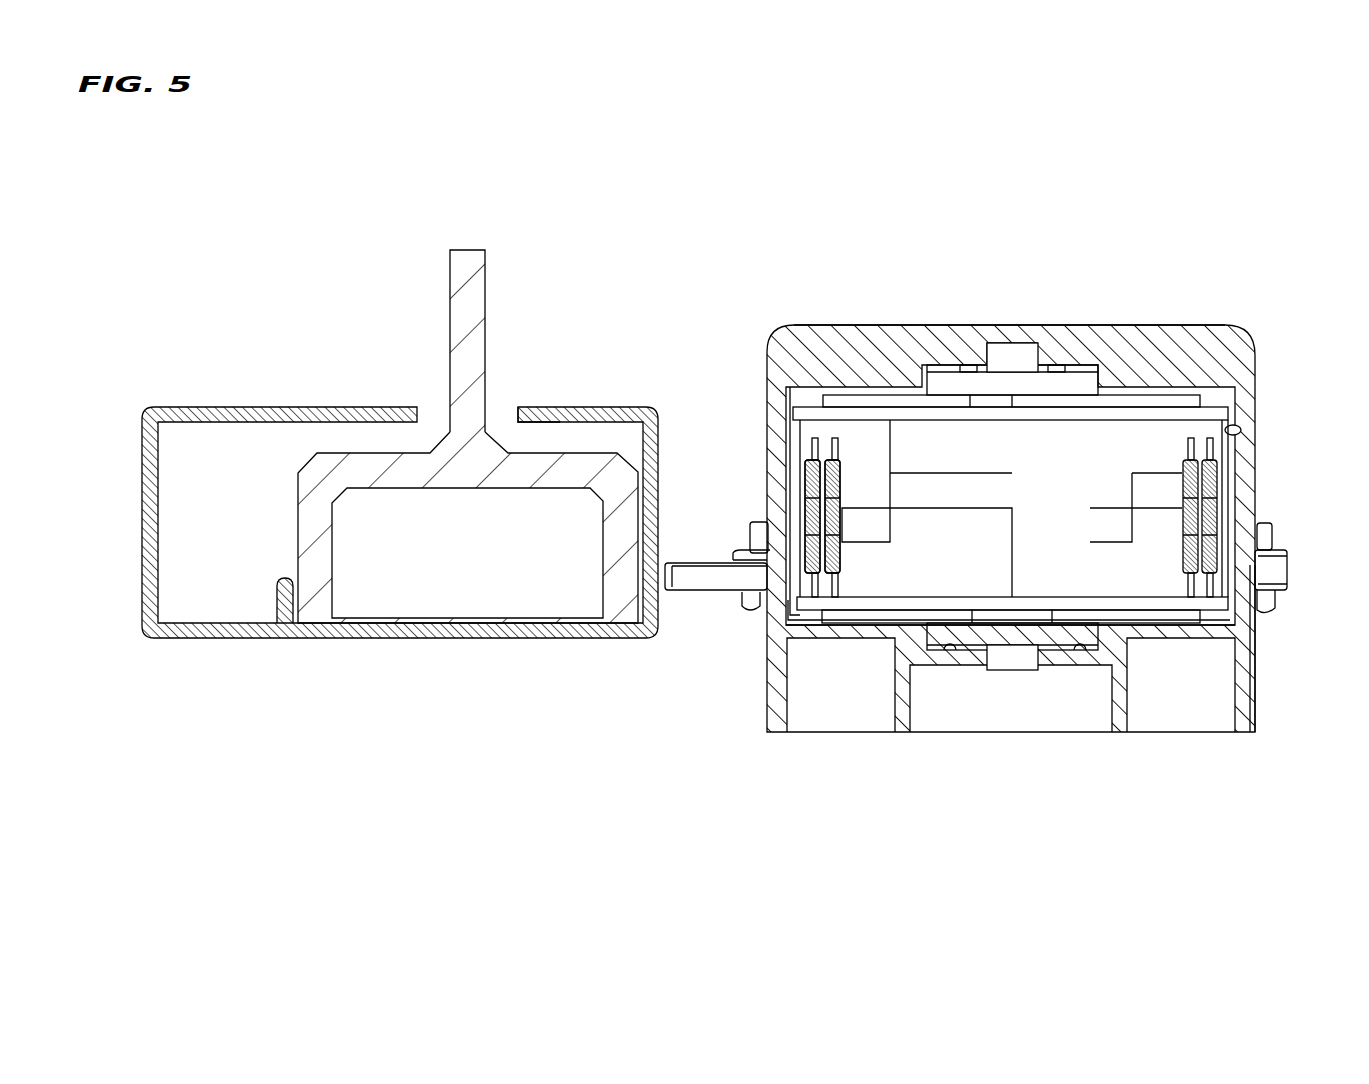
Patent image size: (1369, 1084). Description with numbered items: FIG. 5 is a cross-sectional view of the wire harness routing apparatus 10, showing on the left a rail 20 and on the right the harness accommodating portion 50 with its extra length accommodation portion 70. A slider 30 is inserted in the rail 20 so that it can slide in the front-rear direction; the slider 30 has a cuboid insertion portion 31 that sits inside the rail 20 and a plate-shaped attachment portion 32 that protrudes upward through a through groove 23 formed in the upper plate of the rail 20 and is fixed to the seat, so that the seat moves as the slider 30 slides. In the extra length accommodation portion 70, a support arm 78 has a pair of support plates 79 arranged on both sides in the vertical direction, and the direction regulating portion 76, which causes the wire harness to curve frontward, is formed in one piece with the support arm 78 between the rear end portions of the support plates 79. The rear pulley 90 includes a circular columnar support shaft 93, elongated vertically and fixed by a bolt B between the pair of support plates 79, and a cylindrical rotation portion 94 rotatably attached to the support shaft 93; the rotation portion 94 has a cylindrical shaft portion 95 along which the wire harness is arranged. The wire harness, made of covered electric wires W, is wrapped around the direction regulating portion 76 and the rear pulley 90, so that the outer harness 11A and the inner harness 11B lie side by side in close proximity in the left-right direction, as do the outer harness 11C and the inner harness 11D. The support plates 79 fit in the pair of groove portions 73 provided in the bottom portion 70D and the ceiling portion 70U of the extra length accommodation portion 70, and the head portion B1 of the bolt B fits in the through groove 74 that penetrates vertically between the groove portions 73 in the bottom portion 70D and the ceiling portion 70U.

The wire harness routing apparatus 10 is at (996, 482).
The rail 20 is at (245, 405).
The through groove 23 is at (517, 405).
The slider 30 is at (468, 436).
The insertion portion 31 is at (373, 462).
The attachment portion 32 is at (464, 302).
The harness accommodating portion 50 is at (1273, 692).
The extra length accommodation portion 70 is at (1246, 433).
The ceiling portion 70U is at (1127, 330).
The bottom portion 70D is at (1165, 627).
The groove portion 73 is at (960, 365).
The through groove 74 is at (1032, 375).
The direction regulating portion 76 is at (1035, 400).
The support arm 78 is at (975, 385).
The support plate 79 is at (1012, 506).
The rear pulley 90 is at (806, 392).
The support shaft 93 is at (1187, 440).
The rotation portion 94 is at (907, 445).
The cylindrical shaft portion 95 is at (1006, 434).
The head portion B1 is at (1029, 532).
The bolt B is at (1005, 360).
The covered electric wire W is at (807, 517).
The outer harness 11A is at (1213, 513).
The inner harness 11B is at (1180, 562).
The outer harness 11C is at (805, 560).
The inner harness 11D is at (835, 573).